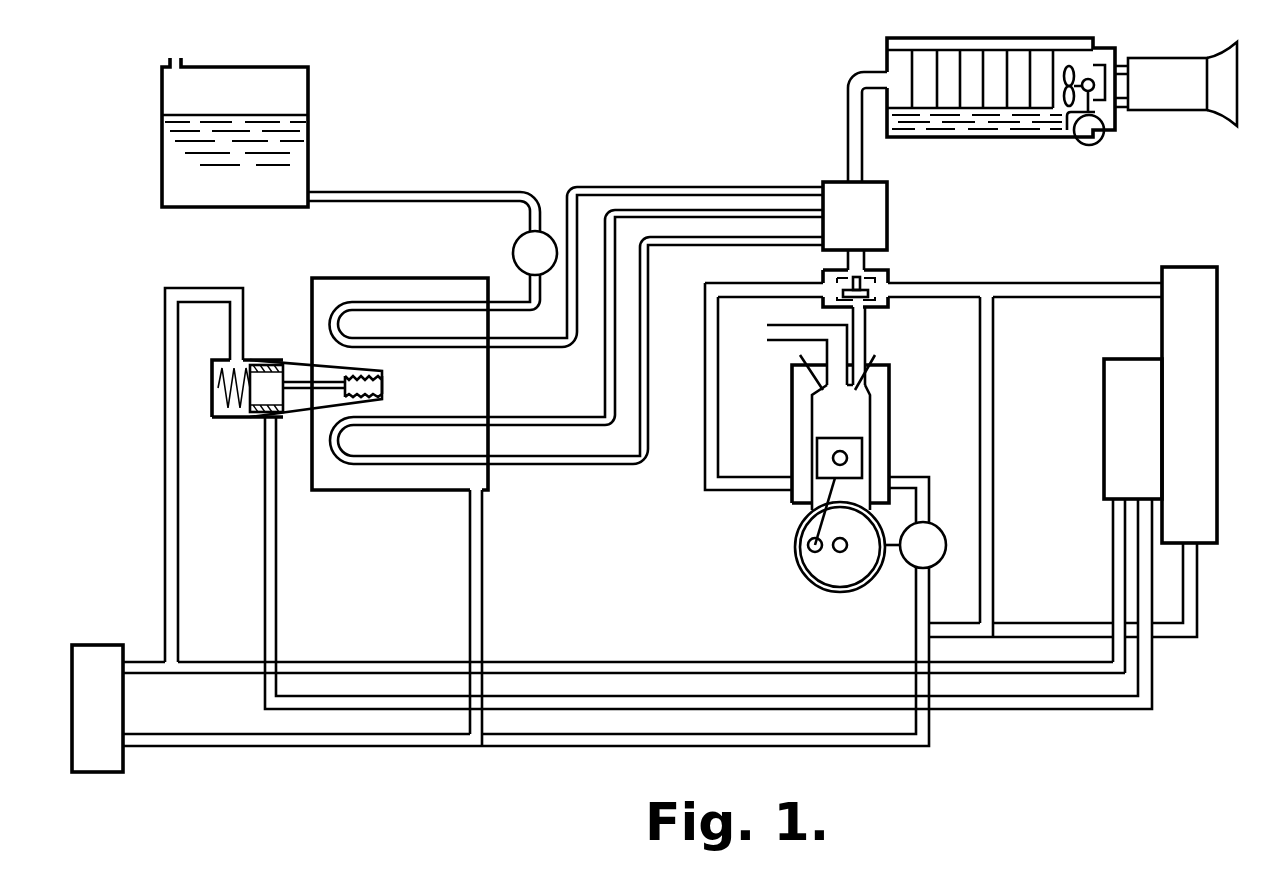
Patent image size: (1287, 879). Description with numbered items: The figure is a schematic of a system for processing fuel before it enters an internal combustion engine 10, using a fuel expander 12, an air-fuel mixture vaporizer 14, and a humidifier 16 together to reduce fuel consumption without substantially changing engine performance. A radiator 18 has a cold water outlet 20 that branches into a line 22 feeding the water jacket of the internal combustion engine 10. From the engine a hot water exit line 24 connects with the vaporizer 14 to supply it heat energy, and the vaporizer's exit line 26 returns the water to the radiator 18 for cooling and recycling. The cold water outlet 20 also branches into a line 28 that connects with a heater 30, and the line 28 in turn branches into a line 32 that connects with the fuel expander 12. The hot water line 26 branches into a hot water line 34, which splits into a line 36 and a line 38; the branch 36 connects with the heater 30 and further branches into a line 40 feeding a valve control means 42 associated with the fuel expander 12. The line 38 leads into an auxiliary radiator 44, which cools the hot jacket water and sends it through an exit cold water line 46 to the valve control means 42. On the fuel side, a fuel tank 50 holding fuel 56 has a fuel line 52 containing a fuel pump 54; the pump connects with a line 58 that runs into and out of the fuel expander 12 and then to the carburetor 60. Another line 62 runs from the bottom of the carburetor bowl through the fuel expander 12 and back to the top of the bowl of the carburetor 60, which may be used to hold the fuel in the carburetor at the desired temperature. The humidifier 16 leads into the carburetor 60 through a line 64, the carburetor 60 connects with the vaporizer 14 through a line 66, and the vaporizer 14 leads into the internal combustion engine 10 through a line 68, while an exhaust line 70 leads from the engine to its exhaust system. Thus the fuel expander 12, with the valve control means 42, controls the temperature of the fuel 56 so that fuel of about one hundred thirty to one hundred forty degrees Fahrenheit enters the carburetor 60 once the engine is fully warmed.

The internal combustion engine 10 is at (858, 421).
The fuel expander 12 is at (438, 338).
The air-fuel mixture vaporizer 14 is at (895, 270).
The humidifier 16 is at (1188, 50).
The radiator 18 is at (1208, 315).
The cold water outlet 20 is at (1080, 623).
The line 22 is at (928, 488).
The hot water exit line 24 is at (740, 493).
The exit line 26 is at (966, 270).
The line 28 is at (225, 733).
The heater 30 is at (117, 695).
The line 32 is at (467, 558).
The hot water line 34 is at (994, 428).
The line 36 is at (376, 658).
The line 38 is at (1046, 667).
The line 40 is at (160, 532).
The valve control means 42 is at (290, 356).
The auxiliary radiator 44 is at (1152, 430).
The exit cold water line 46 is at (262, 553).
The fuel tank 50 is at (247, 107).
The fuel line 52 is at (432, 185).
The fuel pump 54 is at (518, 242).
The fuel 56 is at (247, 197).
The line 58 is at (424, 262).
The carburetor 60 is at (874, 221).
The line 62 is at (550, 432).
The line 64 is at (848, 114).
The line 66 is at (836, 260).
The line 68 is at (870, 322).
The exhaust line 70 is at (782, 332).